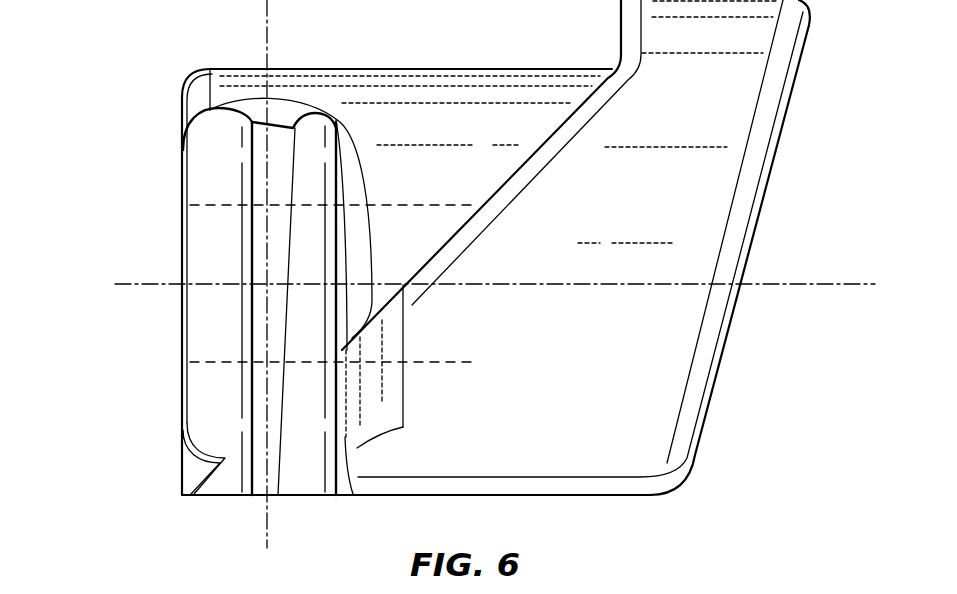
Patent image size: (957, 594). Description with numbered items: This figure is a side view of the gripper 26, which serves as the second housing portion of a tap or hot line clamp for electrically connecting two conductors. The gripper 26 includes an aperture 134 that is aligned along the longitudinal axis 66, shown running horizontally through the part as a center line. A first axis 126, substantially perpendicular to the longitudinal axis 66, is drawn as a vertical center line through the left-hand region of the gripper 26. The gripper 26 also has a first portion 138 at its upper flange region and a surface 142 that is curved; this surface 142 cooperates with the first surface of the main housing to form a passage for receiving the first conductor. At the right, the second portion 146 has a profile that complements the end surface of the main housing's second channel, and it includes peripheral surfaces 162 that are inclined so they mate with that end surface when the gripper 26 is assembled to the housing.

The gripper 26 is at (104, 77).
The longitudinal axis 66 is at (800, 282).
The first axis 126 is at (268, 47).
The aperture 134 is at (210, 318).
The first portion 138 is at (468, 93).
The surface 142 is at (303, 450).
The second portion 146 is at (645, 383).
The peripheral surfaces 162 is at (503, 185).